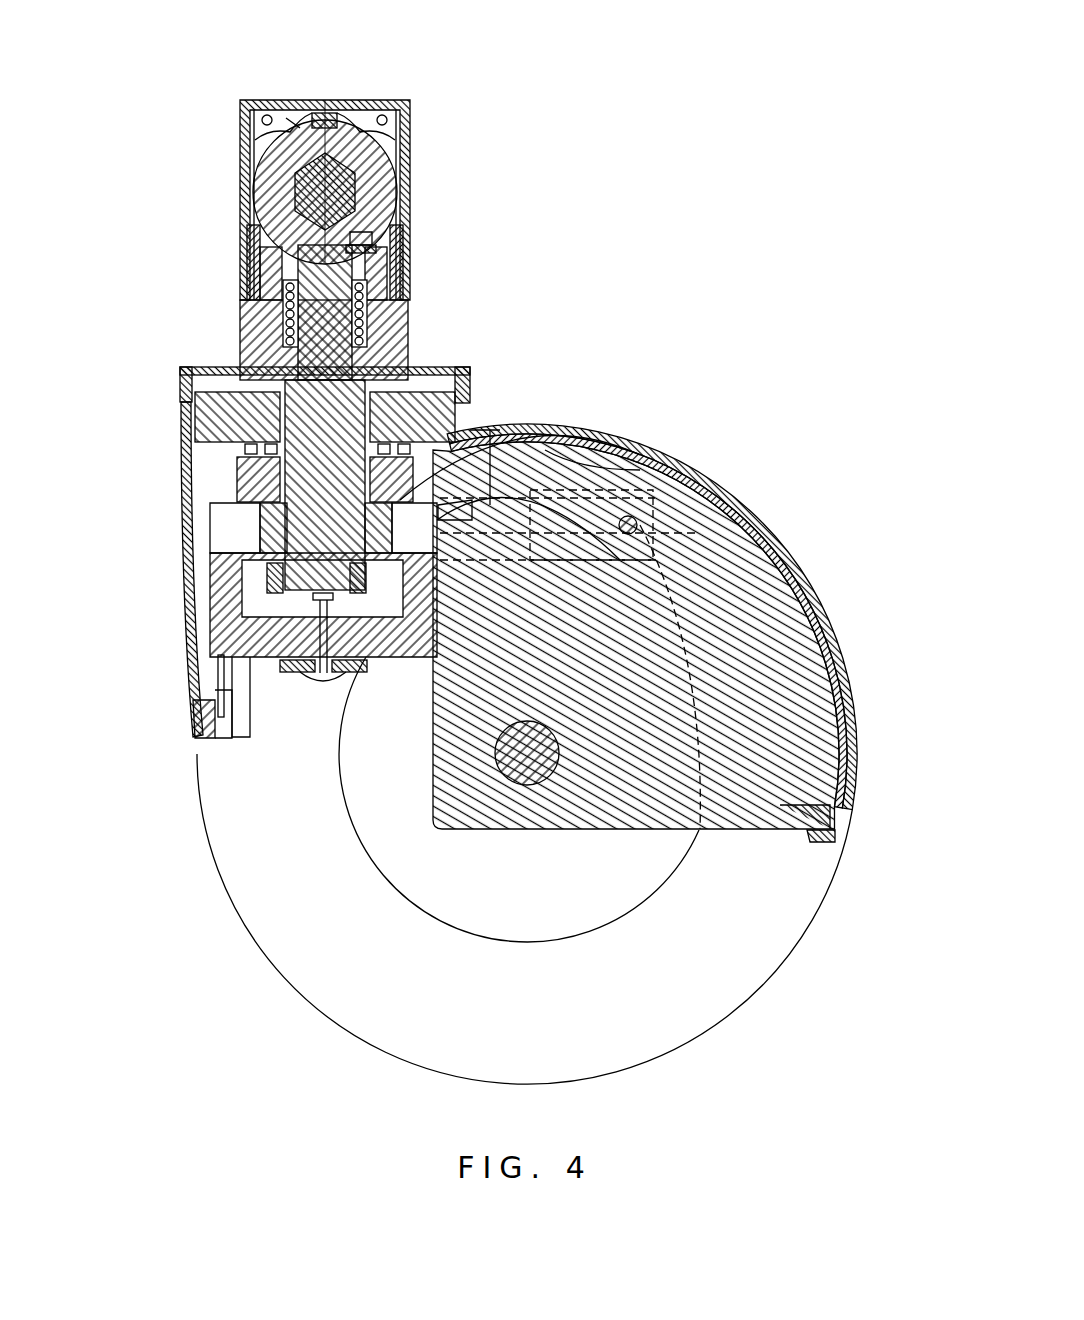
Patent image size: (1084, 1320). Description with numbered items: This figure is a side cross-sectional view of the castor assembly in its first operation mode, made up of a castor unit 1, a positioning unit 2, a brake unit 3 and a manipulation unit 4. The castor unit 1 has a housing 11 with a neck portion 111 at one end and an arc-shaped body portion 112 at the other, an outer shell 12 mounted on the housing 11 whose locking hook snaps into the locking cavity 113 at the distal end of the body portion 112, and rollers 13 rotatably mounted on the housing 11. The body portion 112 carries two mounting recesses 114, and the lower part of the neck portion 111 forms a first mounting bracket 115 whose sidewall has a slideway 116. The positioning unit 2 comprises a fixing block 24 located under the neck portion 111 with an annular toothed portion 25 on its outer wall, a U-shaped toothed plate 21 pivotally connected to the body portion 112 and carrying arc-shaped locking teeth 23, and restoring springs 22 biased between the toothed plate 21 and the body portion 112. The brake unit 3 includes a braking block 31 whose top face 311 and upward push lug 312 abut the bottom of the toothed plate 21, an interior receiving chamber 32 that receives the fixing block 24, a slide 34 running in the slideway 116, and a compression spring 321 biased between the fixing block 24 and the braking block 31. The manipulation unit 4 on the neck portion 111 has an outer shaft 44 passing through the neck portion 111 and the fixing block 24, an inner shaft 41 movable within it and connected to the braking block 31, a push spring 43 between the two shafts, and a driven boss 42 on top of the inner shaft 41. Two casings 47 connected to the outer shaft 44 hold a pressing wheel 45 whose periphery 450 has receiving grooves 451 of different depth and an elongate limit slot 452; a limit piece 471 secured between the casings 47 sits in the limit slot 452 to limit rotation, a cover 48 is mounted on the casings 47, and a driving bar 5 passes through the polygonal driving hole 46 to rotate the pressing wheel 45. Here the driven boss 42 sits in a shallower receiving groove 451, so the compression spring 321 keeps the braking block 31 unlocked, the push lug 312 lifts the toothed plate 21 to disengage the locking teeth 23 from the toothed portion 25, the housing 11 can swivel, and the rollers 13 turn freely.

The castor unit 1 is at (547, 794).
The housing 11 is at (792, 542).
The neck portion 111 is at (198, 410).
The body portion 112 is at (826, 655).
The locking cavity 113 is at (842, 818).
The mounting recesses 114 is at (594, 478).
The first mounting bracket 115 is at (218, 672).
The slideway 116 is at (196, 700).
The outer shell 12 is at (805, 582).
The rollers 13 is at (736, 992).
The positioning unit 2 is at (629, 574).
The toothed plate 21 is at (660, 520).
The restoring springs 22 is at (606, 503).
The locking teeth 23 is at (478, 418).
The fixing block 24 is at (225, 440).
The toothed portion 25 is at (493, 458).
The brake unit 3 is at (394, 668).
The braking block 31 is at (250, 665).
The top face 311 is at (232, 490).
The push lug 312 is at (452, 505).
The receiving chamber 32 is at (232, 612).
The compression spring 321 is at (262, 580).
The slide 34 is at (213, 553).
The manipulation unit 4 is at (387, 306).
The inner shaft 41 is at (352, 347).
The driven boss 42 is at (393, 252).
The push spring 43 is at (362, 305).
The outer shaft 44 is at (250, 325).
The pressing wheel 45 is at (378, 137).
The periphery 450 is at (258, 232).
The receiving grooves 451 is at (373, 226).
The limit slot 452 is at (291, 118).
The polygonal driving hole 46 is at (398, 178).
The casings 47 is at (255, 270).
The limit piece 471 is at (333, 112).
The cover 48 is at (406, 102).
The driving bar 5 is at (292, 183).